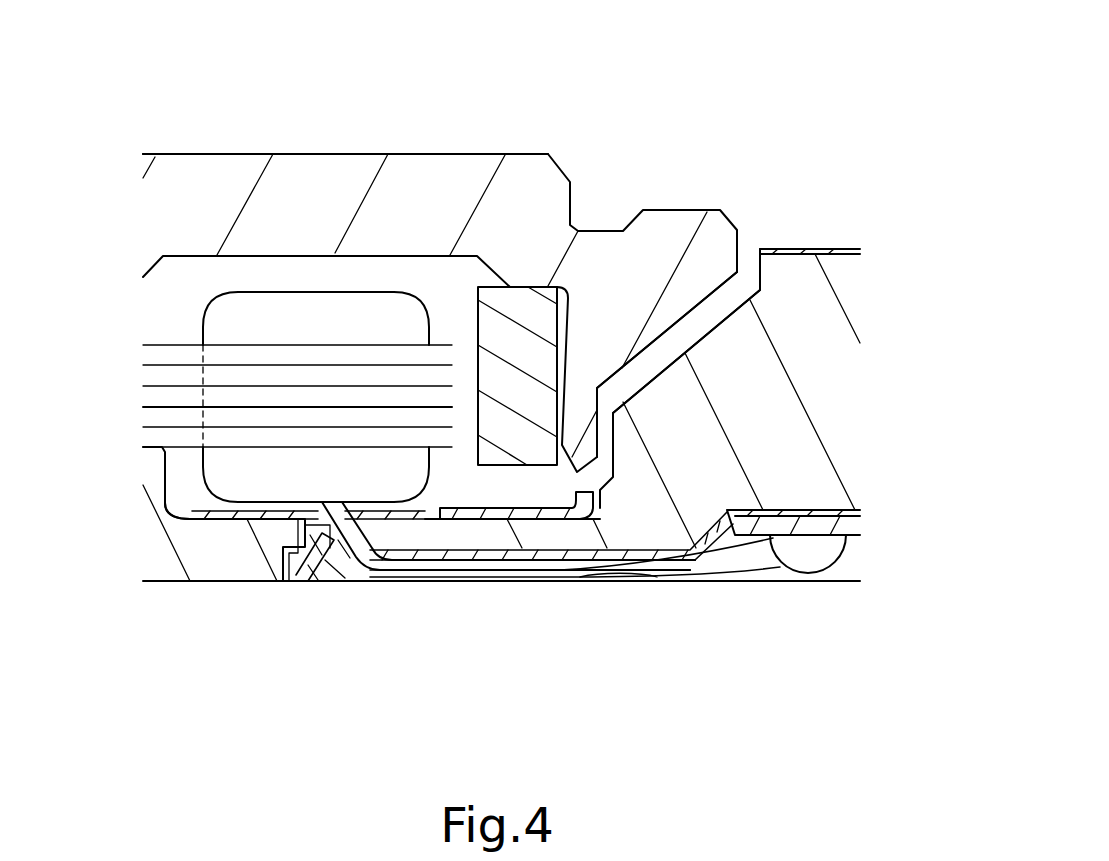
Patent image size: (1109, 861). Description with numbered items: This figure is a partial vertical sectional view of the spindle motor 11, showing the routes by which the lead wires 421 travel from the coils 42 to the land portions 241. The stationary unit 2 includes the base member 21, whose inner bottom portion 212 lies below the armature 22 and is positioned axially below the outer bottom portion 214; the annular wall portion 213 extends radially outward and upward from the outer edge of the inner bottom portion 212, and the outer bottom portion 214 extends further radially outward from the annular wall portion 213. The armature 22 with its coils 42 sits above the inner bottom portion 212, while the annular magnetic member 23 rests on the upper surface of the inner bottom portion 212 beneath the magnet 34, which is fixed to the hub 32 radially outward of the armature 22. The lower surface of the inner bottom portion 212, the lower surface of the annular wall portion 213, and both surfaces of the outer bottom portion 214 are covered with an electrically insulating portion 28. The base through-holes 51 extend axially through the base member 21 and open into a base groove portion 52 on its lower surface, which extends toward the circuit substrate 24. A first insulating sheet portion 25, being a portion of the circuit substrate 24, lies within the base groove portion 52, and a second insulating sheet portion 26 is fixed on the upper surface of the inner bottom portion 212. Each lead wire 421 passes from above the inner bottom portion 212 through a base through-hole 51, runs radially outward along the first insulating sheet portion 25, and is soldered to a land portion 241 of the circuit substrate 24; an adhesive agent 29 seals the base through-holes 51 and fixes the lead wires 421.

The spindle motor 11 is at (713, 112).
The stationary unit 2 is at (702, 598).
The base member 21 is at (638, 378).
The inner bottom portion 212 is at (224, 553).
The annular wall portion 213 is at (688, 452).
The outer bottom portion 214 is at (823, 333).
The armature 22 is at (413, 285).
The magnetic member 23 is at (520, 517).
The circuit substrate 24 is at (827, 525).
The land portions 241 is at (805, 538).
The first insulating sheet portion 25 is at (428, 570).
The second insulating sheet portion 26 is at (273, 513).
The insulating portion 28 is at (800, 250).
The adhesive agent 29 is at (320, 585).
The hub 32 is at (202, 205).
The magnet 34 is at (513, 353).
The coils 42 is at (340, 327).
The lead wires 421 is at (547, 583).
The base through-holes 51 is at (340, 570).
The base groove portion 52 is at (468, 590).